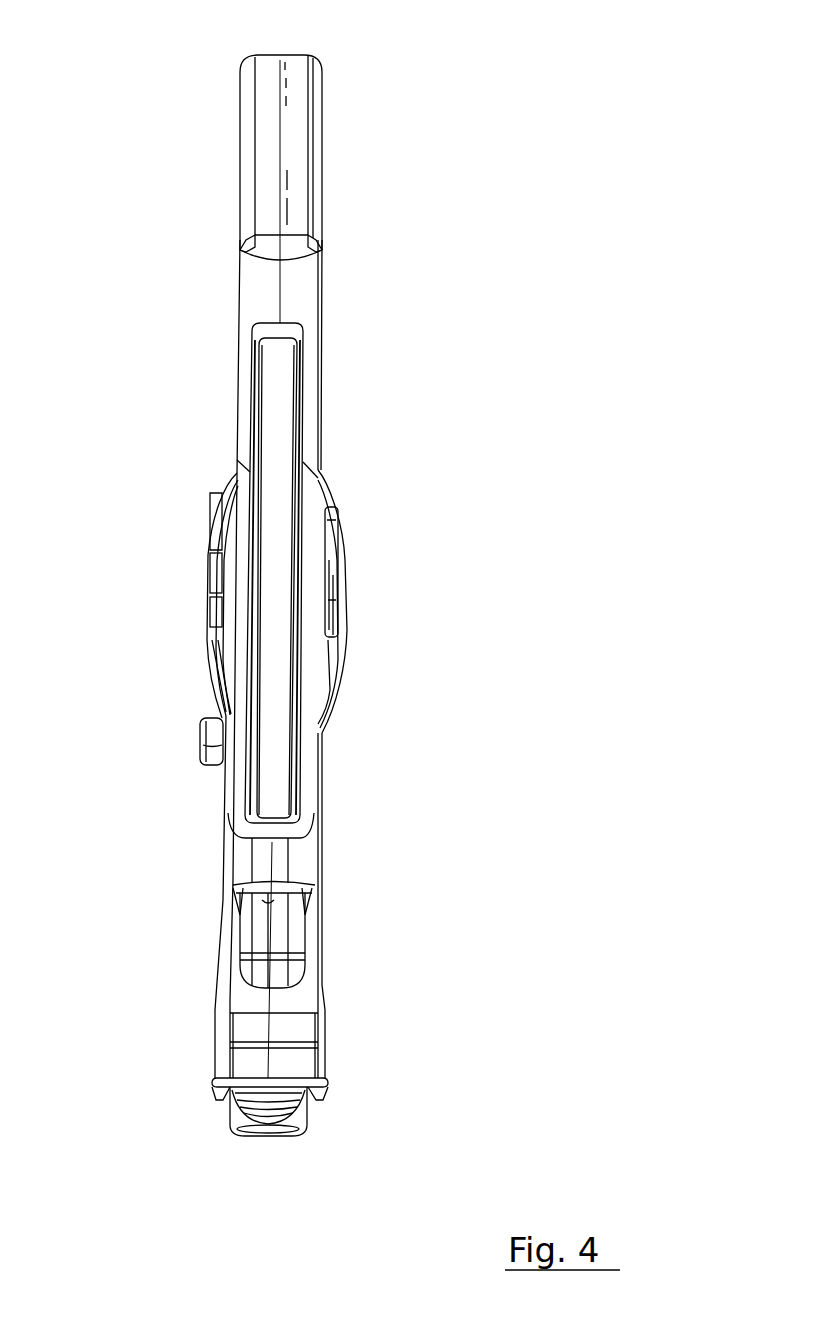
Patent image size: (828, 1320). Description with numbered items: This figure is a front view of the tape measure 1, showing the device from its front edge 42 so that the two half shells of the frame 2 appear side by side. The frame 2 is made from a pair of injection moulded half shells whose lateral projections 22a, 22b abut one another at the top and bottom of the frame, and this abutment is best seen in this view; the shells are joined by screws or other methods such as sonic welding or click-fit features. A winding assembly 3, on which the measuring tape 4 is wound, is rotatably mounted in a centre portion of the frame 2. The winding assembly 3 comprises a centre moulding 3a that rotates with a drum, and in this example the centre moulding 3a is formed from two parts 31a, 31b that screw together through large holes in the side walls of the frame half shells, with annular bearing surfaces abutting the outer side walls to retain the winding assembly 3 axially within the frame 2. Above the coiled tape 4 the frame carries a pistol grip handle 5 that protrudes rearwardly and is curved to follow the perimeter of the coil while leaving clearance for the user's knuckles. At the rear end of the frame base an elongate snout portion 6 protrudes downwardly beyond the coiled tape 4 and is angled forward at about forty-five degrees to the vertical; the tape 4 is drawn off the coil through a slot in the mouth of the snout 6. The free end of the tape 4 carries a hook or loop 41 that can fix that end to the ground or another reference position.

The tape measure 1 is at (506, 100).
The frame 2 is at (333, 295).
The winding assembly 3 is at (338, 523).
The centre moulding 3a is at (342, 552).
The measuring tape 4 is at (287, 389).
The pistol grip handle 5 is at (284, 110).
The snout portion 6 is at (291, 1066).
The lateral projection 22a is at (262, 252).
The lateral projection 22b is at (301, 249).
The centre moulding part 31a is at (208, 643).
The centre moulding part 31b is at (334, 657).
The hook or loop 41 is at (298, 1118).
The front edge 42 is at (276, 592).